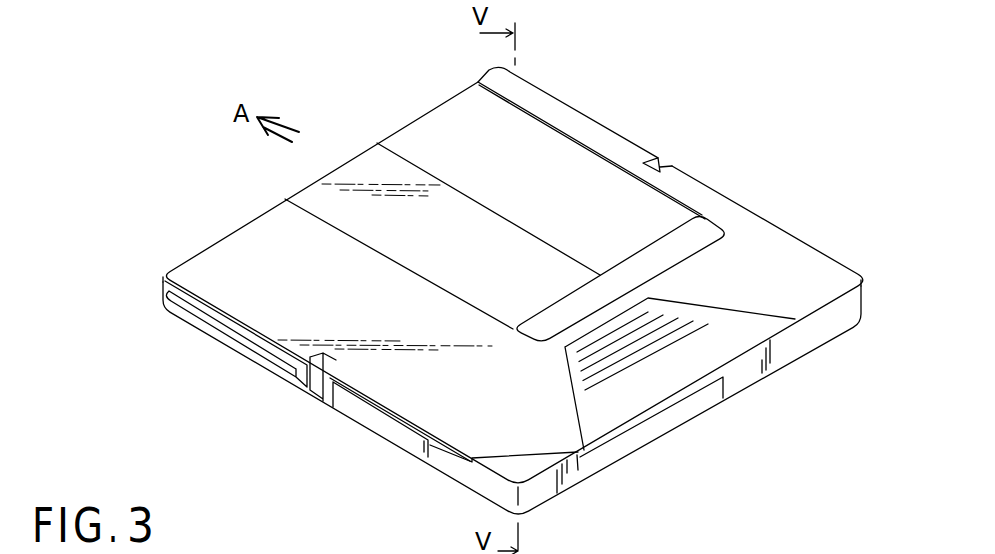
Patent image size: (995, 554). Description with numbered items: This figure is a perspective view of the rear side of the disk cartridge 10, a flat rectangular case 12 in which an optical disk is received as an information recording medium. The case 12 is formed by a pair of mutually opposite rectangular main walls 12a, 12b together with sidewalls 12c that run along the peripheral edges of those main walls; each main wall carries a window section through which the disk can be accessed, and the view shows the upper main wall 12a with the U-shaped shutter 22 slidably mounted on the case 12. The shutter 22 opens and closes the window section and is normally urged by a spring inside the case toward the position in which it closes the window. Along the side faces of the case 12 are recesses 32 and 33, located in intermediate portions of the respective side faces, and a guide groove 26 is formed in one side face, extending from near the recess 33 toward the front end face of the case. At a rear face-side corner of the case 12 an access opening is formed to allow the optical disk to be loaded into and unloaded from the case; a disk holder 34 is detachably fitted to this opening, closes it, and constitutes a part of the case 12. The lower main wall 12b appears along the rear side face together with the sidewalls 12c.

The disk cartridge 10 is at (423, 102).
The case 12 is at (753, 197).
The main wall 12a is at (773, 248).
The main wall 12b is at (753, 370).
The sidewalls 12c is at (783, 352).
The shutter 22 is at (437, 259).
The guide groove 26 is at (233, 347).
The recess 32 is at (662, 161).
The recess 33 is at (318, 395).
The disk holder 34 is at (577, 468).